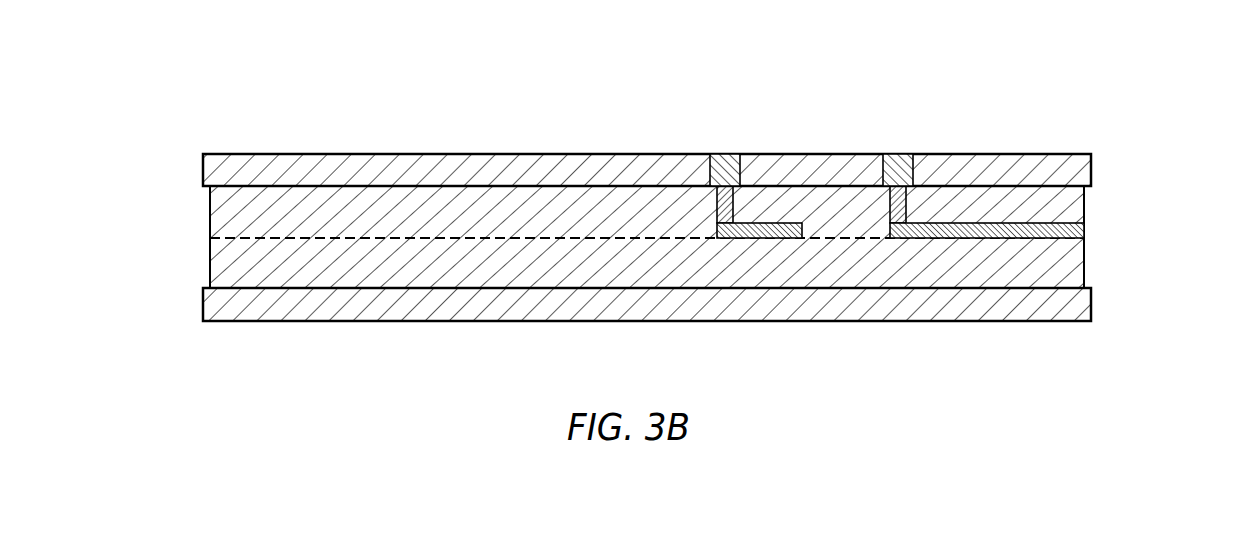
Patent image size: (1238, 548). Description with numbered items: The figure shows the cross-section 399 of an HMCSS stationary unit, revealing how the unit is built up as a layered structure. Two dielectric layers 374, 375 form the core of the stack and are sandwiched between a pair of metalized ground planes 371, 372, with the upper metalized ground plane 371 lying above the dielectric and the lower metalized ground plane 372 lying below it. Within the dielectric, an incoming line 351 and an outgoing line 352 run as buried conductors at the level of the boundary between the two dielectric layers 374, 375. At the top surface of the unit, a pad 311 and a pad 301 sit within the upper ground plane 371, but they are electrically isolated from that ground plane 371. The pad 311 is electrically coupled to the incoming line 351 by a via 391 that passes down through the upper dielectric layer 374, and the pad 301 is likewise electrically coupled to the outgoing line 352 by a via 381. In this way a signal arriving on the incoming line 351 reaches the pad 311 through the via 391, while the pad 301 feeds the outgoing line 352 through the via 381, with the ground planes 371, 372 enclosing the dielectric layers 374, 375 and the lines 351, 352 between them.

The cross-section 399 is at (905, 60).
The metalized ground plane 371 is at (415, 167).
The metalized ground plane 372 is at (535, 312).
The dielectric layers 374 is at (212, 208).
The dielectric layers 375 is at (217, 263).
The pad 311 is at (718, 148).
The pad 301 is at (905, 145).
The via 391 is at (717, 205).
The via 381 is at (907, 208).
The incoming line 351 is at (800, 233).
The outgoing line 352 is at (1080, 232).